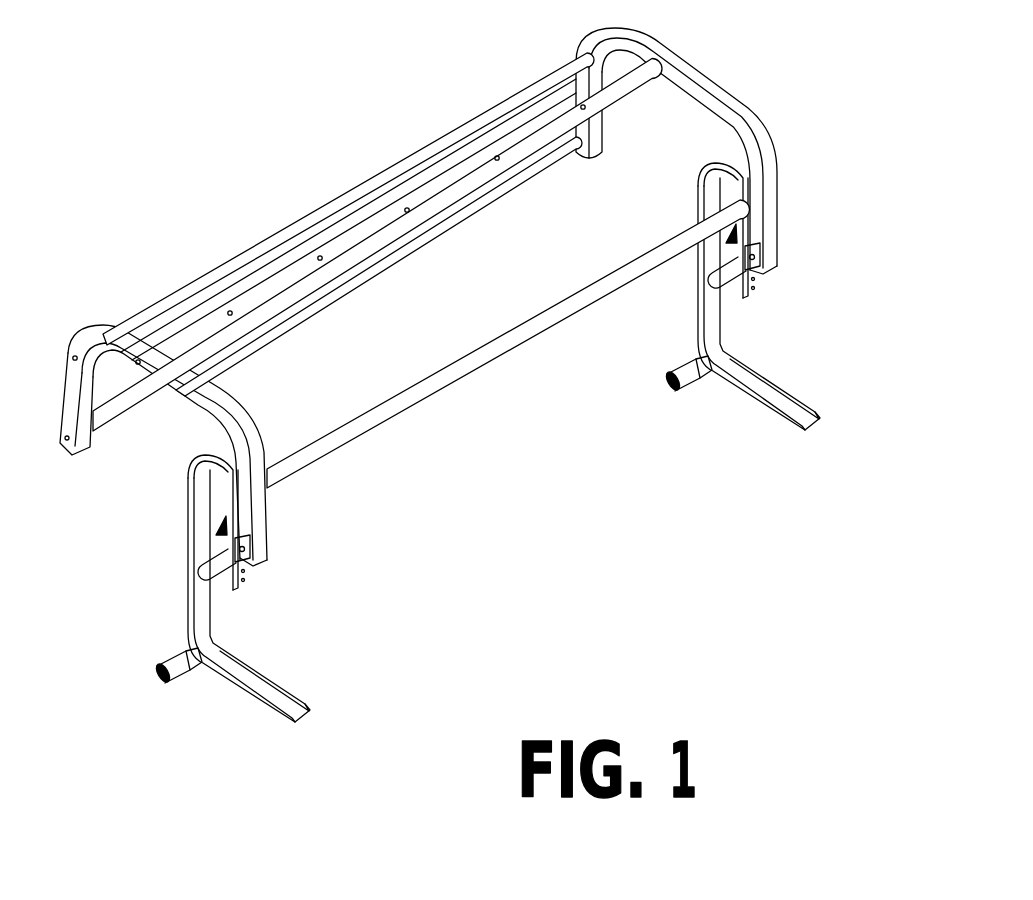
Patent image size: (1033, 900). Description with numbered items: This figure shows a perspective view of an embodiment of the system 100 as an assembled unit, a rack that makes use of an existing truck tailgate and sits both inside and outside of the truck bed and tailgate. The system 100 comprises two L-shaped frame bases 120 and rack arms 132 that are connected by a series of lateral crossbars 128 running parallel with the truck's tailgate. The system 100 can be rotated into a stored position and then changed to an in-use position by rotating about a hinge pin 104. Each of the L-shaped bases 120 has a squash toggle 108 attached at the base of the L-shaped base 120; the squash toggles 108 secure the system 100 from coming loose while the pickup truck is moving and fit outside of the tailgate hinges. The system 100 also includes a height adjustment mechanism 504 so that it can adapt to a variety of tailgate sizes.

The system 100 is at (528, 545).
The hinge pin 104 is at (248, 556).
The squash toggle 108 is at (398, 531).
The L-shaped frame base 120 is at (805, 352).
The lateral crossbars 128 is at (432, 384).
The rack arm 132 is at (694, 75).
The height adjustment mechanism 504 is at (226, 578).